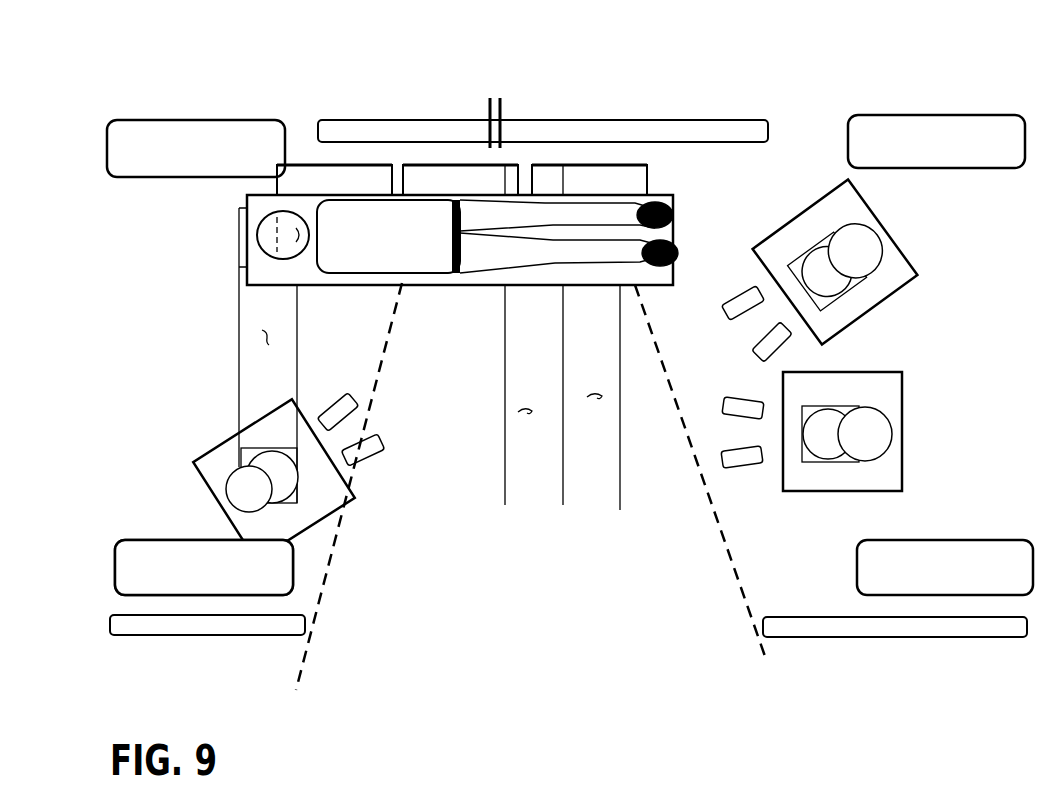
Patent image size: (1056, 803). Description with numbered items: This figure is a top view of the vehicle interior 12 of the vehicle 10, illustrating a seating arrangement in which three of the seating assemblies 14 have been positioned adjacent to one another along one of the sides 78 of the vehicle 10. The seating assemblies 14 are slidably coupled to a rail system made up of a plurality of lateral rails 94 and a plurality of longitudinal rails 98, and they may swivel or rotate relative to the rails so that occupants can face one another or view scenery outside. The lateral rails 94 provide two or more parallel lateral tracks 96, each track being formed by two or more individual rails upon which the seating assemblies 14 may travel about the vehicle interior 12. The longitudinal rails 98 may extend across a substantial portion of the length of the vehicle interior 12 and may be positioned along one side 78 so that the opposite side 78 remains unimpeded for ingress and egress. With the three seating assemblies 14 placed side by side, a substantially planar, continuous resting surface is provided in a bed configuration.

The vehicle 10 is at (157, 94).
The vehicle interior 12 is at (763, 185).
The seating assembly 14 is at (425, 165).
The side 78 is at (773, 143).
The lateral rail 94 is at (297, 370).
The lateral track 96 is at (267, 341).
The longitudinal rail 98 is at (243, 267).